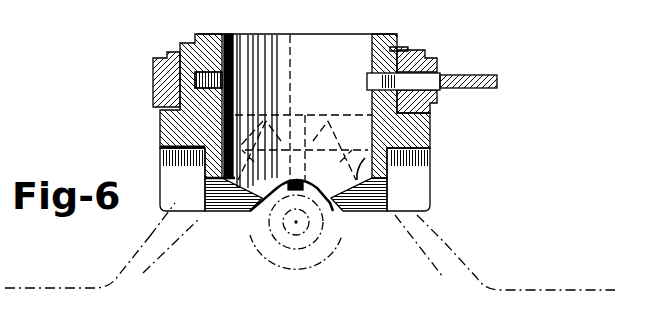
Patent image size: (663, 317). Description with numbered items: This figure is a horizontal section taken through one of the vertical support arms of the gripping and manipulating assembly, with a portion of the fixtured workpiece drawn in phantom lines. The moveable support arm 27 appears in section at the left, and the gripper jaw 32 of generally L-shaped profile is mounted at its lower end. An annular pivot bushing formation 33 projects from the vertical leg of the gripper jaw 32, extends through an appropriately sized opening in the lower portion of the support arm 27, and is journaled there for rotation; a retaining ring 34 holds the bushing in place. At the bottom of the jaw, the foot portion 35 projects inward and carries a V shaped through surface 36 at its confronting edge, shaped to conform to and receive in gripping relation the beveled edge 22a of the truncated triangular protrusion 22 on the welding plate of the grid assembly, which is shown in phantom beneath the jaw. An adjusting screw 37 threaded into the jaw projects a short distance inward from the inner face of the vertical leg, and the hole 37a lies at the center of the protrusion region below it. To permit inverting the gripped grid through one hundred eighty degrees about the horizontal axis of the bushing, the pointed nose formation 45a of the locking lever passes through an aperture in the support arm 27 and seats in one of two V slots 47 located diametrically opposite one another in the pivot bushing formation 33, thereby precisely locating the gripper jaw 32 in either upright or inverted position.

The truncated triangular protrusion 22 is at (493, 282).
The beveled edge 22a is at (437, 238).
The moveable support arm 27 is at (152, 83).
The gripper jaw 32 is at (432, 132).
The pivot bushing formation 33 is at (188, 63).
The retaining ring 34 is at (402, 46).
The foot portion 35 is at (417, 170).
The V shaped through surface 36 is at (357, 213).
The adjusting screw 37 is at (277, 200).
The aperture 37a is at (326, 204).
The pointed nose formation 45a is at (368, 78).
The V slot 47 is at (222, 72).